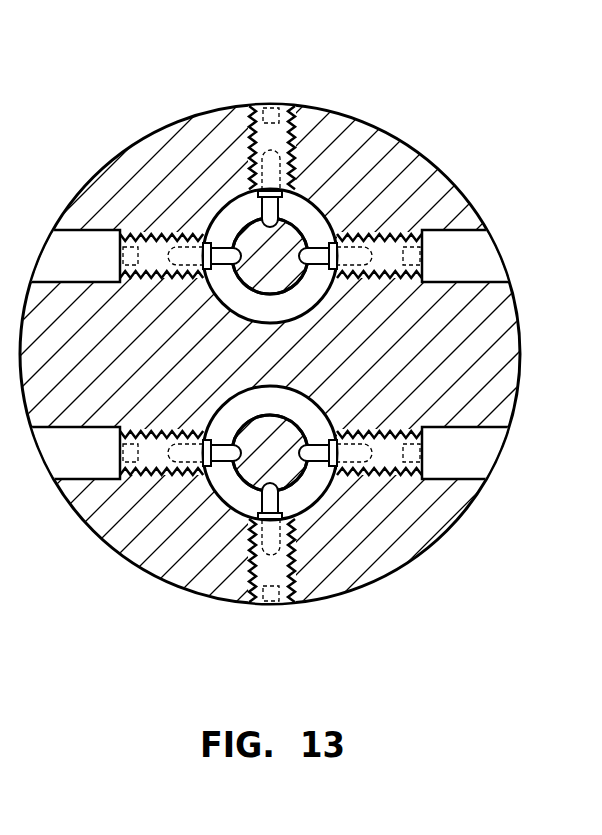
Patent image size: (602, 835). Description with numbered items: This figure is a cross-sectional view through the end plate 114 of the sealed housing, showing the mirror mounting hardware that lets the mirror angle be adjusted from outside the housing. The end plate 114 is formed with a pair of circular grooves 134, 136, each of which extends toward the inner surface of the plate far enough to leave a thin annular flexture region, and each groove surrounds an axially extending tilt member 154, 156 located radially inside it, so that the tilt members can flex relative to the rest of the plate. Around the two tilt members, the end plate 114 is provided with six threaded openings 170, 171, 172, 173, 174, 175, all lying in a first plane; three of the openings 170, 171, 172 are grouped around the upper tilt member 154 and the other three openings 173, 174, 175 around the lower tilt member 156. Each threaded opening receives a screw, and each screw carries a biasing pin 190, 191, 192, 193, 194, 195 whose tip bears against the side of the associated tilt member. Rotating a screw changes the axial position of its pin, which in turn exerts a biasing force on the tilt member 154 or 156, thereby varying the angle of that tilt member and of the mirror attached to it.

The end plate 114 is at (393, 140).
The circular groove 134 is at (227, 213).
The circular groove 136 is at (232, 500).
The tilt member 154 is at (287, 287).
The tilt member 156 is at (262, 418).
The threaded opening 170 is at (133, 237).
The threaded opening 171 is at (282, 133).
The threaded opening 172 is at (402, 237).
The threaded opening 173 is at (148, 477).
The threaded opening 174 is at (278, 587).
The threaded opening 175 is at (397, 470).
The biasing pin 190 is at (225, 270).
The biasing pin 191 is at (290, 205).
The biasing pin 192 is at (316, 262).
The biasing pin 193 is at (233, 447).
The biasing pin 194 is at (280, 503).
The biasing pin 195 is at (315, 452).